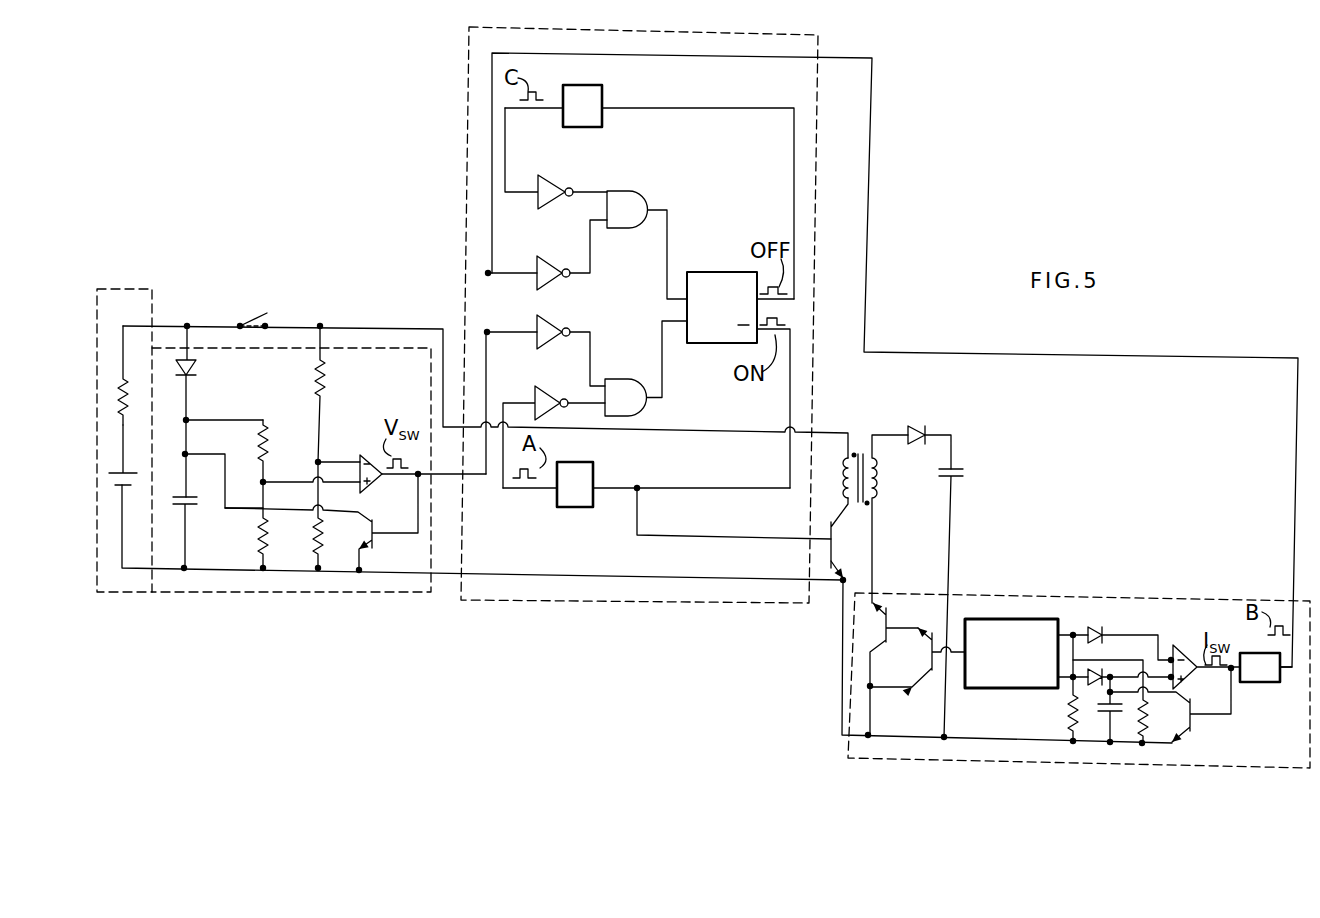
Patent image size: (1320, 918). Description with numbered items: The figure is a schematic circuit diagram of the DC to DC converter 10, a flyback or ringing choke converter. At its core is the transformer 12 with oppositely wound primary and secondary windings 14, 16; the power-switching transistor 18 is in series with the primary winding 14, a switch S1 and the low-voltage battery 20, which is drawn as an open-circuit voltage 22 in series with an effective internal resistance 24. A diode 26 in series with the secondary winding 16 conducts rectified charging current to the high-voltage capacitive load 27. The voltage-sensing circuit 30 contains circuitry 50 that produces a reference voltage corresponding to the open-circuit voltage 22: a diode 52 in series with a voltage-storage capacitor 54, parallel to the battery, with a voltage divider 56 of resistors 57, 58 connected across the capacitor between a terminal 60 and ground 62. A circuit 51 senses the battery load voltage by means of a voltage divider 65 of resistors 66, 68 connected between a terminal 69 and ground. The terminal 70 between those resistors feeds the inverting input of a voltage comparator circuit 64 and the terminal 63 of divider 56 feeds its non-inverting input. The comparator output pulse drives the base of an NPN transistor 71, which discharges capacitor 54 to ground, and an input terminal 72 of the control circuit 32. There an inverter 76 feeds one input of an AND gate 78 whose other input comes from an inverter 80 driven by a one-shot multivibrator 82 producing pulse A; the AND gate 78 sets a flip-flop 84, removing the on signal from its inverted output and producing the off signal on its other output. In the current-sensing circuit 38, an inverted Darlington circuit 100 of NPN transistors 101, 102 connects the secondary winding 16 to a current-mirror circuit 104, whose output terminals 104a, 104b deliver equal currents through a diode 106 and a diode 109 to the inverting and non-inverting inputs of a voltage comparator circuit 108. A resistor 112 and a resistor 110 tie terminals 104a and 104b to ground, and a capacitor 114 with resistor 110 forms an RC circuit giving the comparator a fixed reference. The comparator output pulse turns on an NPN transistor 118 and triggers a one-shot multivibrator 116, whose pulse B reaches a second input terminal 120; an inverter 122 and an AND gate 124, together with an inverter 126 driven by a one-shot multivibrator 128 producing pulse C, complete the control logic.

The DC to DC converter 10 is at (860, 493).
The transformer 12 is at (867, 504).
The primary winding 14 is at (847, 475).
The secondary winding 16 is at (887, 519).
The power-switching transistor 18 is at (832, 546).
The low-voltage battery 20 is at (187, 264).
The battery open-circuit voltage 22 is at (124, 491).
The effective internal resistance 24 is at (130, 396).
The diode 26 is at (915, 426).
The high-voltage capacitive load 27 is at (963, 470).
The voltage-sensing circuit 30 is at (278, 592).
The control circuit 32 is at (501, 603).
The current-sensing circuit 38 is at (848, 740).
The circuitry for producing a reference voltage 50 is at (207, 407).
The circuit for sensing battery load voltage 51 is at (338, 416).
The diode 52 is at (196, 371).
The voltage-storage capacitor 54 is at (190, 500).
The voltage divider 56 is at (250, 466).
The resistor 57 is at (273, 433).
The resistor 58 is at (256, 538).
The terminal 60 is at (184, 454).
The ground 62 is at (184, 570).
The terminal 63 is at (267, 479).
The voltage comparator circuit 64 is at (378, 483).
The voltage divider 65 is at (308, 407).
The resistor 66 is at (324, 388).
The resistor 68 is at (308, 546).
The terminal 69 is at (353, 307).
The terminal 70 is at (320, 459).
The NPN transistor 71 is at (366, 553).
The input terminal 72 is at (497, 307).
The inverter 76 is at (553, 329).
The dual-input AND gate 78 is at (631, 380).
The inverter 80 is at (577, 375).
The one-shot multivibrator 82 is at (607, 462).
The flip-flop 84 is at (714, 272).
The inverted Darlington circuit 100 is at (915, 666).
The NPN transistor 101 is at (927, 607).
The NPN transistor 102 is at (918, 706).
The current-mirror circuit 104 is at (1001, 619).
The output terminal 104a is at (1069, 631).
The output terminal 104b is at (1064, 695).
The diode 106 is at (1100, 631).
The voltage comparator circuit 108 is at (1178, 648).
The diode 109 is at (1096, 670).
The resistor 110 is at (1072, 713).
The resistor 112 is at (1153, 733).
The capacitor 114 is at (1098, 711).
The one-shot multivibrator 116 is at (1278, 683).
The NPN transistor 118 is at (1193, 721).
The second input terminal 120 is at (528, 244).
The inverter 122 is at (550, 264).
The dual-input AND gate 124 is at (693, 161).
The inverter 126 is at (601, 159).
The one-shot multivibrator 128 is at (602, 100).
The switch S1 is at (267, 313).